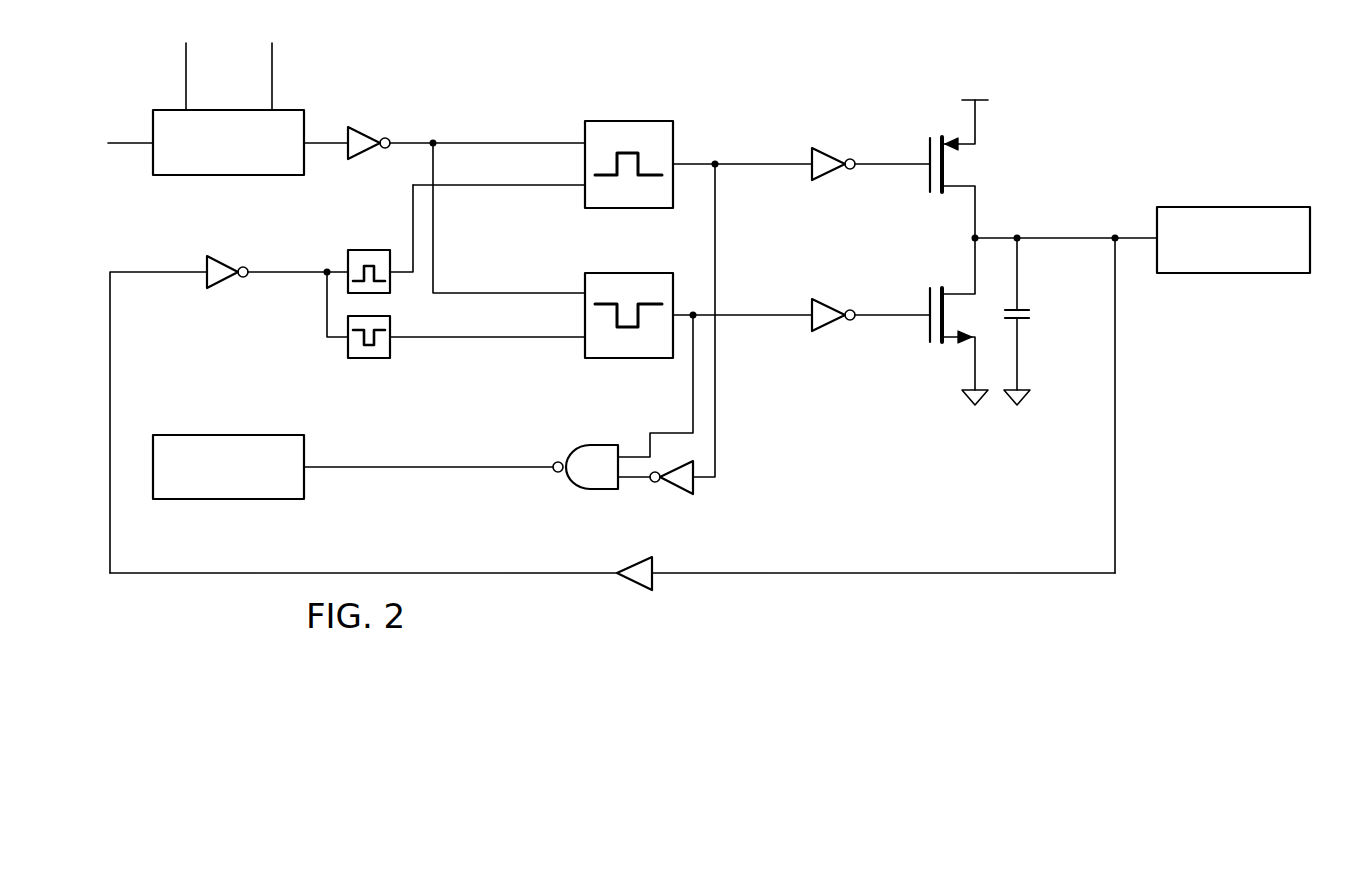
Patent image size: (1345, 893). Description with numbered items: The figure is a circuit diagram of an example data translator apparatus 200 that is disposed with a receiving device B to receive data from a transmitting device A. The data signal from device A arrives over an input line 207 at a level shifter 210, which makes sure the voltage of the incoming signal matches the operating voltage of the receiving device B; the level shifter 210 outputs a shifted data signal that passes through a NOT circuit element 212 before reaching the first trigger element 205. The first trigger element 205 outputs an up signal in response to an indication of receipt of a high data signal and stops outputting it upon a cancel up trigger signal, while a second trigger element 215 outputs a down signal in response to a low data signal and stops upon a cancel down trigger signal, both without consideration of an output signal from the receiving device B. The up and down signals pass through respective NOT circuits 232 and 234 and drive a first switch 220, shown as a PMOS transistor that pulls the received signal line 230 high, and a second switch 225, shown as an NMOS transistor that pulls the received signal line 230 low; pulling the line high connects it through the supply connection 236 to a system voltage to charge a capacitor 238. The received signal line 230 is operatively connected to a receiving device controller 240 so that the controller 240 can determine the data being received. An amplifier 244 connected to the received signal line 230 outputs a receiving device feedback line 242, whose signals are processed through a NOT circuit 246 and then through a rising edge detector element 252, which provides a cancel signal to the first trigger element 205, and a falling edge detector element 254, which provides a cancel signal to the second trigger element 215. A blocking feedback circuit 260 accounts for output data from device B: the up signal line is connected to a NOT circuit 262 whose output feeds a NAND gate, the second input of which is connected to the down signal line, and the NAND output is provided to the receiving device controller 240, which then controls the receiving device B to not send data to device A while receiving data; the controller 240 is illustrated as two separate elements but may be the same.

The apparatus 200 is at (1098, 74).
The first trigger element 205 is at (628, 119).
The input line 207 is at (133, 141).
The level shifter 210 is at (228, 108).
The NOT circuit element 212 is at (363, 127).
The second trigger element 215 is at (629, 360).
The first switch 220 is at (928, 175).
The second switch 225 is at (928, 326).
The received signal line 230 is at (995, 236).
The NOT circuit 232 is at (828, 149).
The NOT circuit 234 is at (828, 300).
The supply voltage 236 is at (978, 98).
The capacitor 238 is at (1031, 318).
The receiving device controller 240 is at (1234, 206).
The receiving device feedback line 242 is at (158, 276).
The amplifier 244 is at (633, 591).
The NOT circuit 246 is at (223, 257).
The rising edge detector element 252 is at (368, 249).
The falling edge detector element 254 is at (369, 360).
The blocking feedback circuit 260 is at (735, 472).
The NOT circuit 262 is at (676, 494).